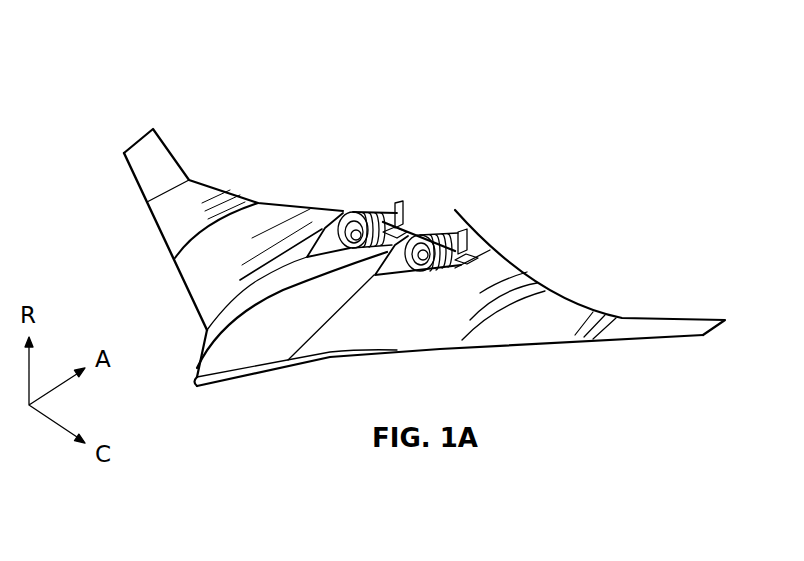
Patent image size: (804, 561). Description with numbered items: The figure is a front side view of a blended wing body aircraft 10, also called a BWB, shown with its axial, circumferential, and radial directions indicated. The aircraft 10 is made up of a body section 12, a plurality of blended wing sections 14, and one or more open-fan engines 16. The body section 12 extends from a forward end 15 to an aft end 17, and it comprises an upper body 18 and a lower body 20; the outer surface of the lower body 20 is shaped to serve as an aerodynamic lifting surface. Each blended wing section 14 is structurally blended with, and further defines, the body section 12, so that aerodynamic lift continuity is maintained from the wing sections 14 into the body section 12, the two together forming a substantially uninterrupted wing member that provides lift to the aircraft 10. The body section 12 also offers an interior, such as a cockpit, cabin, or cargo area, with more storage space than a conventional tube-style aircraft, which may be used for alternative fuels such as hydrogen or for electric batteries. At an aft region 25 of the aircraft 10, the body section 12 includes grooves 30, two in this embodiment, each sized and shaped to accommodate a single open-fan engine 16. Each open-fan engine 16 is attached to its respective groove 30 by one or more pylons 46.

The blended wing body aircraft 10 is at (142, 44).
The body section 12 is at (267, 352).
The blended wing sections 14 is at (212, 184).
The forward end 15 is at (189, 397).
The open-fan engines 16 is at (387, 211).
The aft end 17 is at (507, 180).
The upper body 18 is at (232, 312).
The lower body 20 is at (234, 391).
The aft region 25 is at (364, 194).
The grooves 30 is at (410, 230).
The pylons 46 is at (399, 202).